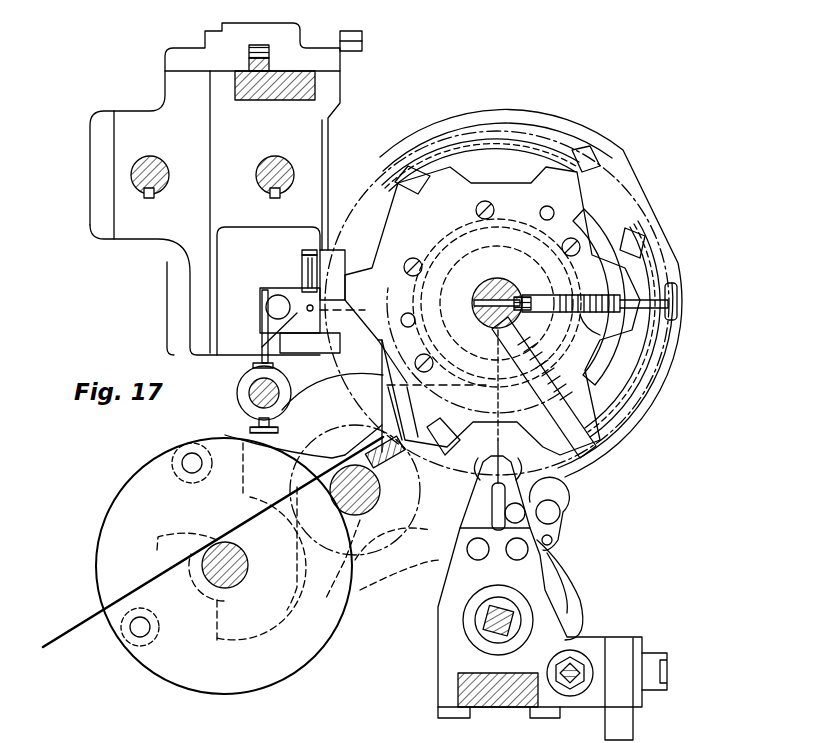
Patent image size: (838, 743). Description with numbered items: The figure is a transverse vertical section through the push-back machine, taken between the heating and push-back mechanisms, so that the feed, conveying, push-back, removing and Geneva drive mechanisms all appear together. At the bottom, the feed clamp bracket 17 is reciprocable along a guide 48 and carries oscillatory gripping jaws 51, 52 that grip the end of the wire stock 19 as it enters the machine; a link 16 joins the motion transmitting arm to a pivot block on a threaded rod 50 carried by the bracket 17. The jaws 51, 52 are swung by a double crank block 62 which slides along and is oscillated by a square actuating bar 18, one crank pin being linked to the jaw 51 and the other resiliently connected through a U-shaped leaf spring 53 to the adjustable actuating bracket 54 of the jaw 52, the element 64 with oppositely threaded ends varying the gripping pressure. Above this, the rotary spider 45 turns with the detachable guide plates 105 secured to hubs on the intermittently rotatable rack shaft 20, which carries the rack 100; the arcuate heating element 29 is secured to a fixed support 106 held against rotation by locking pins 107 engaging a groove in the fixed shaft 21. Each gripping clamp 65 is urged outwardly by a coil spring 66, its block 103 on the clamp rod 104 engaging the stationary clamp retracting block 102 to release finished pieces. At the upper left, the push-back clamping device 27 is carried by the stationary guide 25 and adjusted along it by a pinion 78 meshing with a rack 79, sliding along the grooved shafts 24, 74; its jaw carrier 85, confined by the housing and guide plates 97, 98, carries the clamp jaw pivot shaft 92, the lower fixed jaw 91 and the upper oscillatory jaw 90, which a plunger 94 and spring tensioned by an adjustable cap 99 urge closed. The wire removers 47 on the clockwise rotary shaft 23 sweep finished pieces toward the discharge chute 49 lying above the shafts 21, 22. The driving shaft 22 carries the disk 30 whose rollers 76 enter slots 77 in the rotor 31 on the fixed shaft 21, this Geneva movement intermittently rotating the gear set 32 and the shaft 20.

The link 16 is at (633, 728).
The feed clamp bracket 17 is at (445, 670).
The square actuating bar 18 is at (480, 630).
The wire stock 19 is at (335, 318).
The rack shaft 20 is at (482, 300).
The fixed shaft 21 is at (372, 497).
The driving shaft 22 is at (230, 580).
The rotary shaft 23 is at (248, 386).
The grooved shaft 24 is at (296, 150).
The stationary guide 25 is at (300, 84).
The push-back clamping device 27 is at (217, 213).
The heating element 29 is at (650, 210).
The disk 30 is at (118, 528).
The rotor 31 is at (368, 600).
The gear set 32 is at (380, 580).
The spider 45 is at (425, 165).
The wire remover 47 is at (262, 323).
The guide 48 is at (505, 700).
The discharge chute 49 is at (75, 625).
The threaded rod 50 is at (575, 660).
The gripping jaw 51 is at (480, 455).
The gripping jaw 52 is at (522, 455).
The U-shaped leaf spring 53 is at (565, 580).
The actuating bracket 54 is at (560, 528).
The double crank block 62 is at (490, 612).
The adjusting element 64 is at (556, 500).
The gripping clamp 65 is at (660, 300).
The coil spring 66 is at (610, 292).
The grooved shaft 74 is at (170, 150).
The roller 76 is at (175, 460).
The slot 77 is at (365, 395).
The pinion 78 is at (368, 40).
The rack 79 is at (250, 58).
The jaw carrier 85 is at (265, 343).
The upper oscillatory jaw 90 is at (300, 290).
The lower fixed jaw 91 is at (295, 333).
The clamp jaw pivot shaft 92 is at (268, 308).
The plunger 94 is at (309, 250).
The housing plate 97 is at (185, 300).
The guide plate 98 is at (340, 265).
The adjustable cap 99 is at (302, 254).
The rack 100 is at (545, 294).
The clamp retracting block 102 is at (428, 345).
The block 103 is at (575, 320).
The clamp rod 104 is at (535, 392).
The guide plate 105 is at (410, 222).
The fixed support 106 is at (600, 388).
The locking pin 107 is at (340, 474).